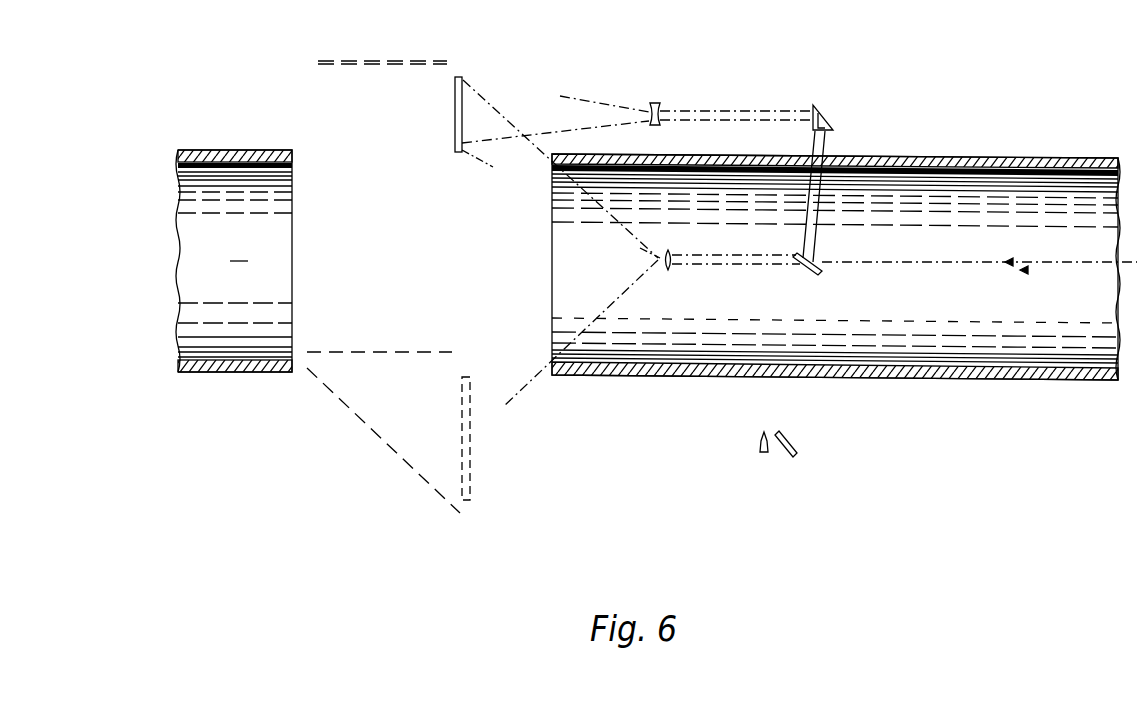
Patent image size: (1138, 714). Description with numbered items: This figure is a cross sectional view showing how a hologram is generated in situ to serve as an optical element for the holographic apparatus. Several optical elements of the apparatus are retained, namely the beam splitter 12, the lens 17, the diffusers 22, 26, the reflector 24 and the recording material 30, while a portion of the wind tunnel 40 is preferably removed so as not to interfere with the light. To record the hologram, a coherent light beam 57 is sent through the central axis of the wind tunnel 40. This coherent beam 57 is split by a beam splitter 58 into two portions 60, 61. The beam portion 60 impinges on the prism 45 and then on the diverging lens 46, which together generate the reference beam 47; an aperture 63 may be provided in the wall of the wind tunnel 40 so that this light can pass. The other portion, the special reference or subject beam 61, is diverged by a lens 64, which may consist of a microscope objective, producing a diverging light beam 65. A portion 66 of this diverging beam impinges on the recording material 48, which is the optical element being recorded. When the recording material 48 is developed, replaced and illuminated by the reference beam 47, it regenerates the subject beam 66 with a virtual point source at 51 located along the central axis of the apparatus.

The beam splitter 12 is at (783, 430).
The lens 17 is at (763, 453).
The diffuser 22 is at (499, 449).
The reflector 24 is at (392, 447).
The diffuser 26 is at (367, 352).
The recording material 30 is at (325, 58).
The wind tunnel 40 is at (1017, 158).
The prism 45 is at (827, 103).
The diverging lens 46 is at (653, 103).
The reference beam 47 is at (611, 104).
The optical element 48 is at (460, 75).
The virtual point source 51 is at (658, 265).
The coherent light beam 57 is at (1048, 270).
The beam splitter 58 is at (832, 276).
The beam portion 60 is at (813, 242).
The subject beam 61 is at (730, 265).
The aperture 63 is at (827, 157).
The lens 64 is at (672, 263).
The diverging light beam 65 is at (628, 231).
The beam portion 66 is at (541, 150).